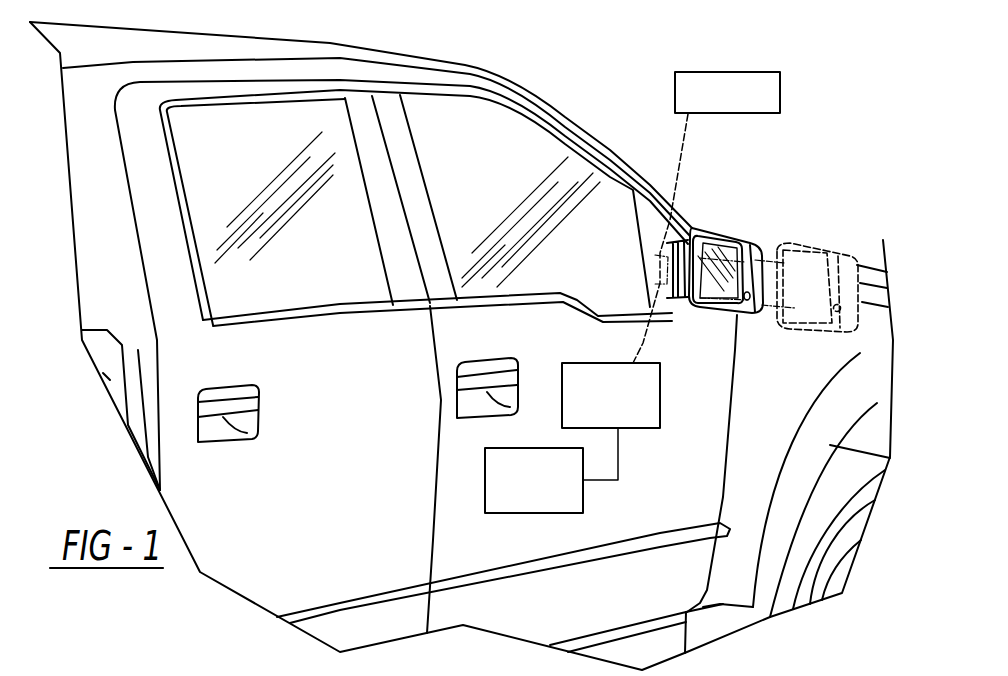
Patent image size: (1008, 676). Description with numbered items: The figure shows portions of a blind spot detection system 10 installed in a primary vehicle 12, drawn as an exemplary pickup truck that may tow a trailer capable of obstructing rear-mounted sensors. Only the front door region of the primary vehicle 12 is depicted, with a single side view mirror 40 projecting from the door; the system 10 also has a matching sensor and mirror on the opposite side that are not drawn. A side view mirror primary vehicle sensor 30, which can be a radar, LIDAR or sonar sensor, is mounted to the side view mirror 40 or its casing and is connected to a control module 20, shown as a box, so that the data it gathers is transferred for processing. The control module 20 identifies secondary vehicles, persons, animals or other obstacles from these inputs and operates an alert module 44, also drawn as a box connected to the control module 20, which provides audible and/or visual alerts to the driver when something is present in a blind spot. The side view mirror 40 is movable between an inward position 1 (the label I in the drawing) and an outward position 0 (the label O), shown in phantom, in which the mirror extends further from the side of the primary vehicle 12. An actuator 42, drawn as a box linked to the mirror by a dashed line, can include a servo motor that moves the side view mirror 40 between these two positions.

The blind spot detection system 10 is at (648, 148).
The primary vehicle 12 is at (840, 94).
The side view mirror 40 is at (705, 228).
The inward position 1 is at (727, 230).
The side view mirror primary vehicle sensor 30 is at (749, 305).
The outward position 0 is at (808, 238).
The actuator 42 is at (713, 72).
The control module 20 is at (660, 414).
The alert module 44 is at (485, 470).